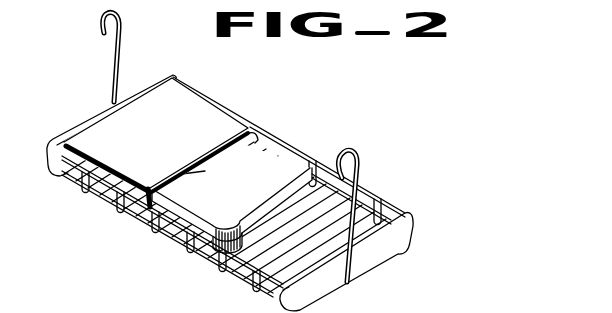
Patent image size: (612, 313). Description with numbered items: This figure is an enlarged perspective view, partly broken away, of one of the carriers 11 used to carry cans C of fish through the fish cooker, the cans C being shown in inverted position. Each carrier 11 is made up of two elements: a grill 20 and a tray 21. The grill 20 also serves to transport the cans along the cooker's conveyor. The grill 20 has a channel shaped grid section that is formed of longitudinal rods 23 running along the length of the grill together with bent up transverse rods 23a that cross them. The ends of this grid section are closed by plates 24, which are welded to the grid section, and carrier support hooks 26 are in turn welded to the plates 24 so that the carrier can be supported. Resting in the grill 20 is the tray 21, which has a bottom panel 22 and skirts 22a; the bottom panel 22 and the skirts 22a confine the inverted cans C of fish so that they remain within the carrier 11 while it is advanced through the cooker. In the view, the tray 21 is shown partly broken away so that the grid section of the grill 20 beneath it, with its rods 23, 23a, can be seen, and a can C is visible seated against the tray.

The carrier 11 is at (409, 190).
The grill 20 is at (249, 284).
The tray 21 is at (217, 107).
The bottom panel 22 is at (257, 138).
The skirts 22a is at (148, 203).
The longitudinal rods 23 is at (307, 253).
The bent up transverse rods 23a is at (97, 211).
The plates 24 is at (84, 122).
The carrier support hooks 26 is at (101, 23).
The cans C is at (247, 203).